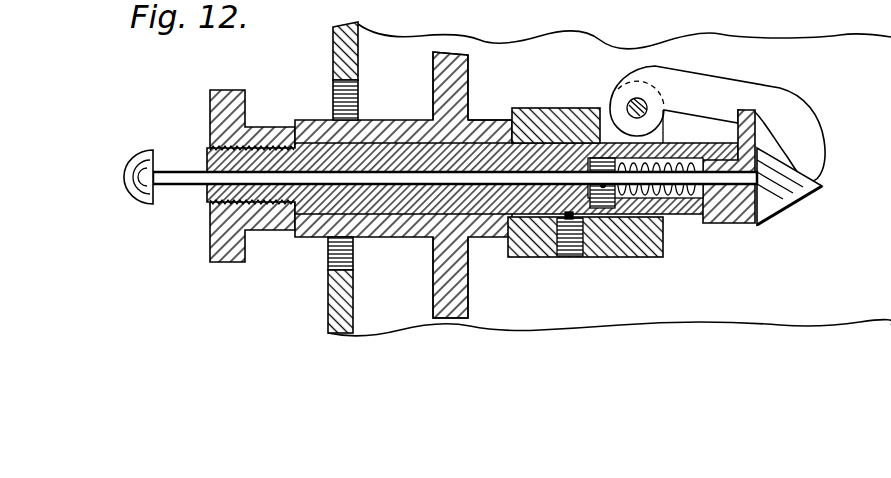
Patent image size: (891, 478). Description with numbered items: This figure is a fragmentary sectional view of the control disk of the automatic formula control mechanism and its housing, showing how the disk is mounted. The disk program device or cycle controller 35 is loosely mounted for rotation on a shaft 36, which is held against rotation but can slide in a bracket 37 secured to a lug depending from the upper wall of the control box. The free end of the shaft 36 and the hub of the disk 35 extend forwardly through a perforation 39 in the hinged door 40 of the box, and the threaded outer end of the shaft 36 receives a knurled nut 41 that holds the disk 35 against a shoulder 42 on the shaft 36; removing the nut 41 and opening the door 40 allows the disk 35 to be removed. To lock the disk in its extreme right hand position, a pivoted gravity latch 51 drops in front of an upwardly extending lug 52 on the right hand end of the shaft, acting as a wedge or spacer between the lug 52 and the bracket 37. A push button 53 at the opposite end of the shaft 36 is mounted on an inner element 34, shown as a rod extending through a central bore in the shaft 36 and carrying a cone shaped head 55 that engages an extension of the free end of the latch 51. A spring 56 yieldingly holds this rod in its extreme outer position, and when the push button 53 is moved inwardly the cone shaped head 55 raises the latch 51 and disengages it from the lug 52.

The stem 34 is at (417, 182).
The cycle controller 35 is at (468, 62).
The shaft 36 is at (378, 152).
The bracket 37 is at (560, 112).
The perforation 39 is at (330, 258).
The hinged door 40 is at (333, 53).
The knurled nut 41 is at (228, 100).
The shoulder 42 is at (485, 128).
The gravity latch 51 is at (700, 88).
The lug 52 is at (755, 126).
The push button 53 is at (140, 152).
The cone shaped head 55 is at (800, 178).
The spring 56 is at (678, 197).